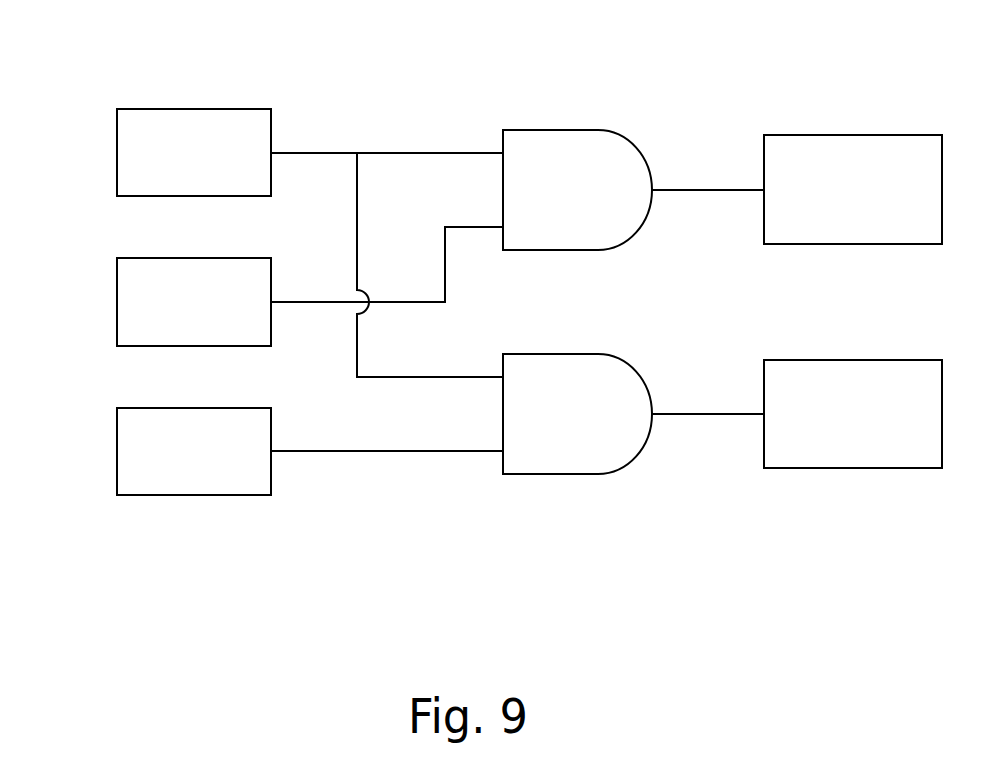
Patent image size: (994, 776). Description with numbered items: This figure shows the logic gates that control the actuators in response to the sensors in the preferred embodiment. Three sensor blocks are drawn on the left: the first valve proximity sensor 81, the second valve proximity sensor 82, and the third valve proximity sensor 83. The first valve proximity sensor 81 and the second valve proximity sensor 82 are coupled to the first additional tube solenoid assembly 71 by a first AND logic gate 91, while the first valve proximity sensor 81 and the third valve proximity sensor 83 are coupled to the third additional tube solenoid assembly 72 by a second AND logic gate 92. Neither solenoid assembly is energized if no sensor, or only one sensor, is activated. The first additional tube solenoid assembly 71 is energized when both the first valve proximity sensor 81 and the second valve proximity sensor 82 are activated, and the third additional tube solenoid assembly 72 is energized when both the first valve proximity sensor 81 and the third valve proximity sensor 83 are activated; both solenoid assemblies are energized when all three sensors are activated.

The first additional tube solenoid assembly 71 is at (853, 135).
The third additional tube solenoid assembly 72 is at (854, 468).
The first valve proximity sensor 81 is at (192, 109).
The second valve proximity sensor 82 is at (117, 302).
The third valve proximity sensor 83 is at (193, 495).
The first AND logic gate 91 is at (547, 130).
The second AND logic gate 92 is at (547, 474).